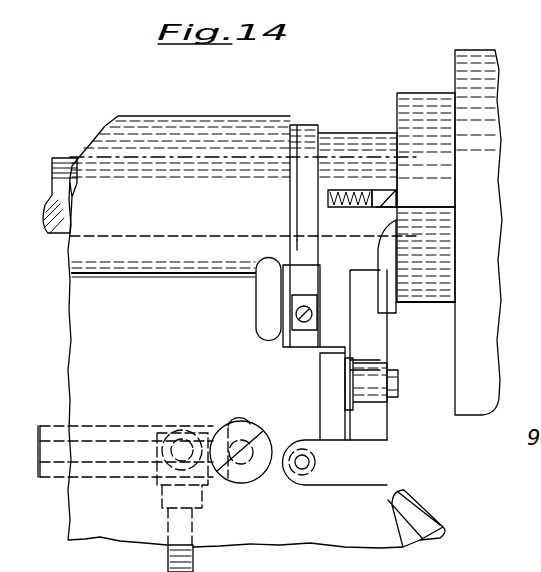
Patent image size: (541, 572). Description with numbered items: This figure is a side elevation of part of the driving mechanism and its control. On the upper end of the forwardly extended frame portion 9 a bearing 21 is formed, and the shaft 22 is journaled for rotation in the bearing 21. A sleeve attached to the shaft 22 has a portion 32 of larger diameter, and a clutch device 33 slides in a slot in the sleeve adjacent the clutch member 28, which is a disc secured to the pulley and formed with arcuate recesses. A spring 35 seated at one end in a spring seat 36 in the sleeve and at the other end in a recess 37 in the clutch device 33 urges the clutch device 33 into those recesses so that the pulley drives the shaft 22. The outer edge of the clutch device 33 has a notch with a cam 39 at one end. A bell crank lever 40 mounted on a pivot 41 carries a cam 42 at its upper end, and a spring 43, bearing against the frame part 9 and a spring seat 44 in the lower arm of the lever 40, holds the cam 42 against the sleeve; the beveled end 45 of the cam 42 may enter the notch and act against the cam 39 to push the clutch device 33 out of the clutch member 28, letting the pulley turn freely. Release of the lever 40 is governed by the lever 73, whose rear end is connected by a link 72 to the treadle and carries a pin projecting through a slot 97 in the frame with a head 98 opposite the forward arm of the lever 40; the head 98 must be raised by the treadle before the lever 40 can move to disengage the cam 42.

The forwardly extended portion 9 is at (88, 308).
The bearing 21 is at (191, 128).
The shaft 22 is at (62, 165).
The clutch member 28 is at (478, 73).
The sleeve portion of larger diameter 32 is at (462, 190).
The clutch device 33 is at (381, 205).
The spring 35 is at (344, 190).
The spring seat 36 is at (302, 148).
The recess 37 is at (368, 190).
The cam 39 is at (398, 207).
The bell crank lever 40 is at (385, 417).
The pivot 41 is at (400, 384).
The cam 42 is at (396, 285).
The spring 43 is at (306, 478).
The spring seat 44 is at (316, 470).
The beveled end 45 is at (395, 240).
The link 72 is at (195, 560).
The lever 73 is at (57, 480).
The slot 97 is at (243, 418).
The head 98 is at (247, 480).